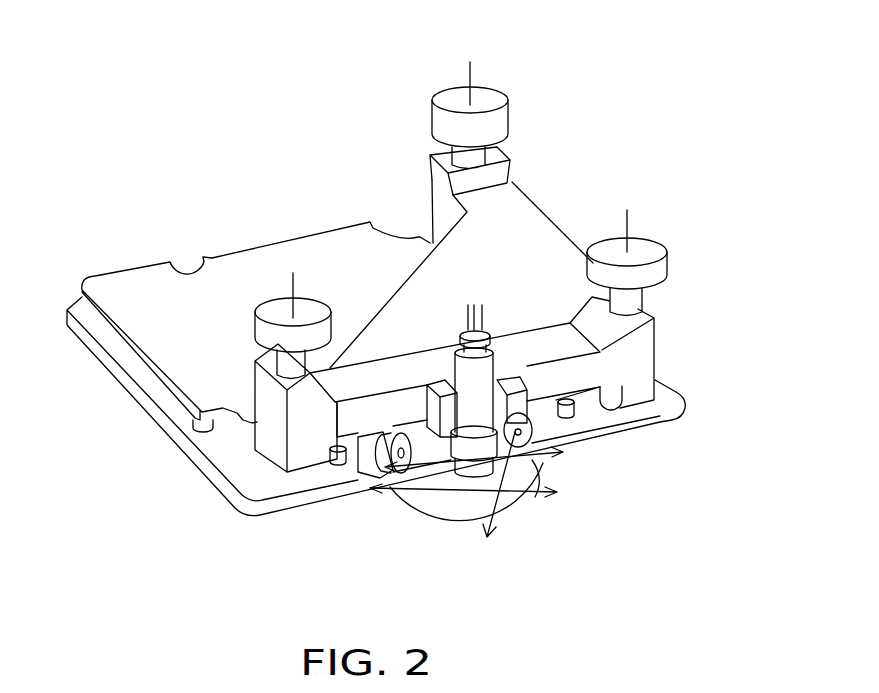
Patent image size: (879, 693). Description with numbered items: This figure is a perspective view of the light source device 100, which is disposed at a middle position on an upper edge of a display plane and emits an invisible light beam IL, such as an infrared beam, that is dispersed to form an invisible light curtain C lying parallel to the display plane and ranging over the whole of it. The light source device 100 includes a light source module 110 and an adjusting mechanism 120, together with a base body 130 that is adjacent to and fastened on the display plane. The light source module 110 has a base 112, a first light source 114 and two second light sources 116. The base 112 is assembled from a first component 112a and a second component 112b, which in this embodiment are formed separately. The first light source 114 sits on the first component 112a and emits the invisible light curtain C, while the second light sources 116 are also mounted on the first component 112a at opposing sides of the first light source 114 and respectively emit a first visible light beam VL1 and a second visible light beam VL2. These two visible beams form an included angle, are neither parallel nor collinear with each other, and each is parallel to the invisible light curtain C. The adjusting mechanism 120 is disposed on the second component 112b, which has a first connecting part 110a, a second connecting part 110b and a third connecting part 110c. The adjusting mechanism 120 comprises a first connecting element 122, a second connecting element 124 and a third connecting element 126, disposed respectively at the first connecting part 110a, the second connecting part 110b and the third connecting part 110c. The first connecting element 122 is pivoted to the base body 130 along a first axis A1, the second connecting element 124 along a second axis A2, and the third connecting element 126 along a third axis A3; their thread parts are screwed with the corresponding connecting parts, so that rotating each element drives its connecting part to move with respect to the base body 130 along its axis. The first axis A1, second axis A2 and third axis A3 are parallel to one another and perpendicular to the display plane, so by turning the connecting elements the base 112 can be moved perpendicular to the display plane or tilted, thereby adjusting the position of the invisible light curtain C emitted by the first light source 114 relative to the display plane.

The light source device 100 is at (697, 295).
The light source module 110 is at (381, 283).
The first connecting part 110a is at (440, 195).
The second connecting part 110b is at (303, 437).
The third connecting part 110c is at (640, 368).
The base 112 is at (185, 520).
The first component 112a is at (350, 440).
The second component 112b is at (318, 425).
The first light source 114 is at (478, 373).
The second light sources 116 is at (573, 437).
The adjusting mechanism 120 is at (510, 33).
The first connecting element 122 is at (442, 125).
The second connecting element 124 is at (273, 308).
The third connecting element 126 is at (612, 243).
The base body 130 is at (155, 287).
The first axis A1 is at (483, 100).
The second axis A2 is at (295, 282).
The third axis A3 is at (627, 218).
The invisible light beam IL is at (565, 488).
The first visible light beam VL1 is at (507, 510).
The second visible light beam VL2 is at (540, 495).
The invisible light curtain C is at (433, 523).